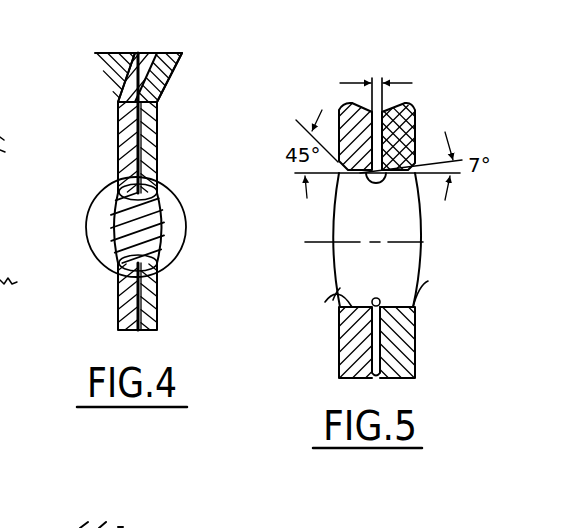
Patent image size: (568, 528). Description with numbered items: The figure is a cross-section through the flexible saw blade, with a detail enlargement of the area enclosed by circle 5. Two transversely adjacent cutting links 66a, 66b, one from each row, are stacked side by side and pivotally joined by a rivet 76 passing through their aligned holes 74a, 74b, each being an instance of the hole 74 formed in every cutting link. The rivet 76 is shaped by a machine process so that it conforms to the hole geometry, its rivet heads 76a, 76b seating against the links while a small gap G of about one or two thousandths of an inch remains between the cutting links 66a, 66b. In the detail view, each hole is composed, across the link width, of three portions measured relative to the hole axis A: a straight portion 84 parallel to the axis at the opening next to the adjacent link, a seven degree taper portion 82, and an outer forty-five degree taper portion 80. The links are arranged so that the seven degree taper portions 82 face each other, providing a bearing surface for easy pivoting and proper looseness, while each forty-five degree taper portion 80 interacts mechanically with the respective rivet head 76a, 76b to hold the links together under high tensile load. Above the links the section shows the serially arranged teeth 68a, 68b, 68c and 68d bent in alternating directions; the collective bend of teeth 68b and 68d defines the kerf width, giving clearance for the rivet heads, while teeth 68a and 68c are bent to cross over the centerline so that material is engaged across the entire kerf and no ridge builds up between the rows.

In FIG. 4, the circle 5 is at (86, 220).
In FIG. 4, the cutting link 66a is at (157, 150).
In FIG. 5, the cutting link 66a is at (418, 108).
In FIG. 4, the cutting link 66b is at (118, 148).
In FIG. 5, the cutting link 66b is at (338, 110).
In FIG. 4, the tooth 68a is at (150, 53).
In FIG. 4, the tooth 68b is at (100, 53).
In FIG. 4, the tooth 68c is at (122, 53).
In FIG. 4, the tooth 68d is at (182, 53).
In FIG. 4, the hole 74 is at (160, 195).
In FIG. 5, the hole 74a is at (398, 307).
In FIG. 5, the hole 74b is at (330, 290).
In FIG. 4, the rivet 76 is at (105, 238).
In FIG. 5, the rivet head 76a is at (415, 305).
In FIG. 5, the rivet head 76b is at (333, 300).
In FIG. 5, the 45 degree taper portion 80 is at (333, 175).
In FIG. 5, the 7 degree taper portion 82 is at (383, 186).
In FIG. 5, the straight portion 84 is at (412, 128).
In FIG. 5, the gap G is at (377, 80).
In FIG. 5, the hole axis A is at (442, 243).